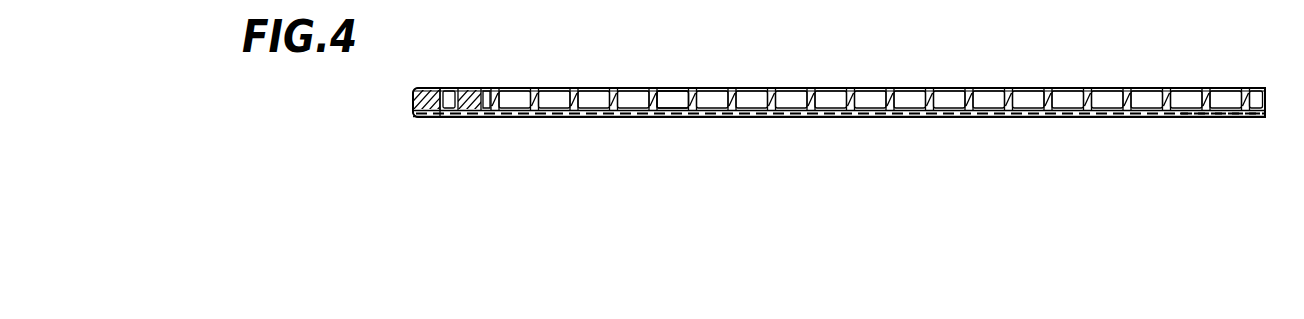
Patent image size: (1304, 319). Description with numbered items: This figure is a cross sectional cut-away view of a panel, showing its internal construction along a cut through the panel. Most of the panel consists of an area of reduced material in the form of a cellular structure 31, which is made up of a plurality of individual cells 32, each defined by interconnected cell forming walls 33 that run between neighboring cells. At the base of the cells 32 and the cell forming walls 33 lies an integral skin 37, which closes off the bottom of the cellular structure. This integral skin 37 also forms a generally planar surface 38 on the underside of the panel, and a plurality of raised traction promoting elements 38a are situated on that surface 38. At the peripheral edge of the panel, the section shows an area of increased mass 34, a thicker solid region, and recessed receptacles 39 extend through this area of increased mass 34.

The cellular structure 31 is at (837, 90).
The individual cells 32 is at (677, 100).
The cell forming walls 33 is at (748, 88).
The area of increased mass 34 is at (428, 88).
The recessed receptacles 39 is at (452, 88).
The integral skin 37 is at (841, 142).
The generally planar surface 38 is at (992, 117).
The raised traction promoting elements 38a is at (1230, 117).